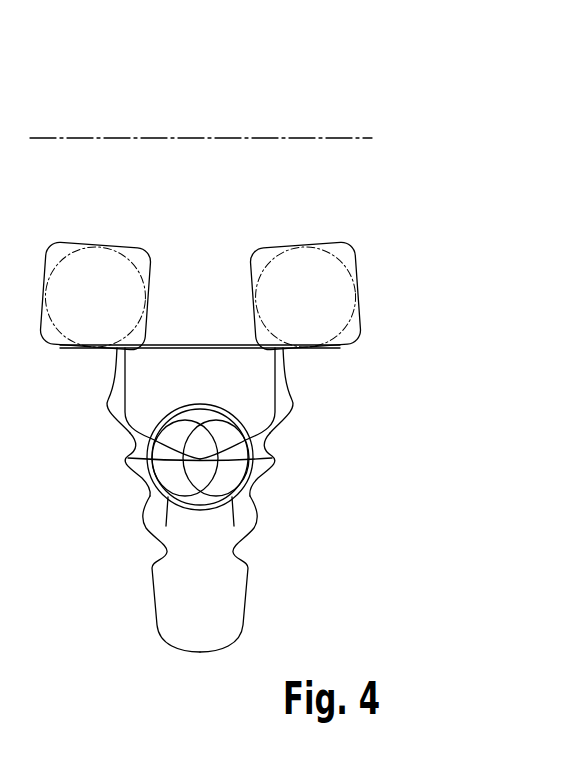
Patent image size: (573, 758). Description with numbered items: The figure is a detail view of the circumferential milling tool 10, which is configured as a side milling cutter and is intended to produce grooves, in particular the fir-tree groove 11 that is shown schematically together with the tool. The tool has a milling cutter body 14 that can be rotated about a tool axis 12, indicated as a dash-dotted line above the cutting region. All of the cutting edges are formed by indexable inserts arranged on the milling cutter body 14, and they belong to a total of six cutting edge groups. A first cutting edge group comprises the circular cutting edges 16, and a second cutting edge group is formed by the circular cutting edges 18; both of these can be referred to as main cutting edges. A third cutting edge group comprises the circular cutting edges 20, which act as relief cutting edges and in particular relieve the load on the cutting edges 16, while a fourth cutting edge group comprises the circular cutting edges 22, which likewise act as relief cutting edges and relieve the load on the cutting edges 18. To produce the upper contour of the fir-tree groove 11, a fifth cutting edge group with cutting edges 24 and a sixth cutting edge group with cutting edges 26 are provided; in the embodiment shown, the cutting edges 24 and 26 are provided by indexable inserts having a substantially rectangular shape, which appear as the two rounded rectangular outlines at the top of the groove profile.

The circumferential milling tool 10 is at (124, 108).
The fir-tree groove 11 is at (243, 617).
The tool axis 12 is at (318, 137).
The milling cutter body 14 is at (350, 190).
The cutting edges 16 is at (236, 520).
The cutting edges 18 is at (164, 520).
The cutting edges 20 is at (272, 458).
The cutting edges 22 is at (128, 458).
The cutting edges 24 is at (69, 246).
The cutting edges 26 is at (268, 245).